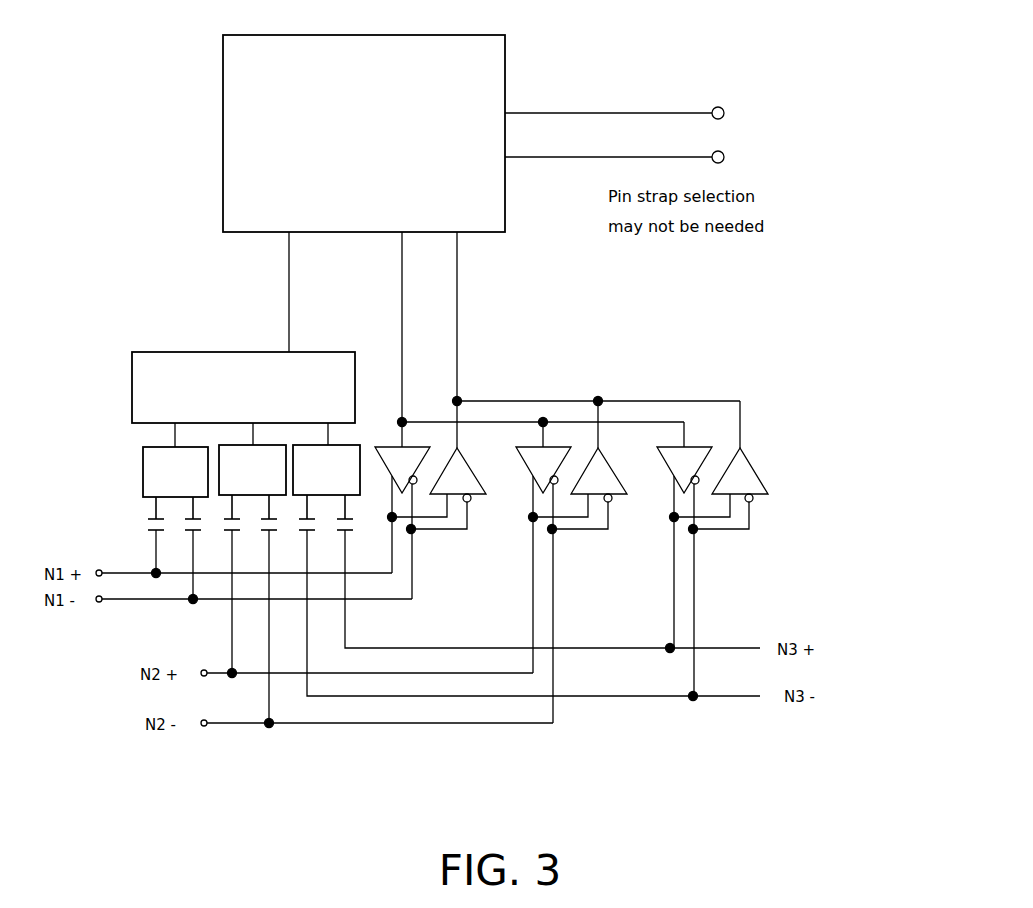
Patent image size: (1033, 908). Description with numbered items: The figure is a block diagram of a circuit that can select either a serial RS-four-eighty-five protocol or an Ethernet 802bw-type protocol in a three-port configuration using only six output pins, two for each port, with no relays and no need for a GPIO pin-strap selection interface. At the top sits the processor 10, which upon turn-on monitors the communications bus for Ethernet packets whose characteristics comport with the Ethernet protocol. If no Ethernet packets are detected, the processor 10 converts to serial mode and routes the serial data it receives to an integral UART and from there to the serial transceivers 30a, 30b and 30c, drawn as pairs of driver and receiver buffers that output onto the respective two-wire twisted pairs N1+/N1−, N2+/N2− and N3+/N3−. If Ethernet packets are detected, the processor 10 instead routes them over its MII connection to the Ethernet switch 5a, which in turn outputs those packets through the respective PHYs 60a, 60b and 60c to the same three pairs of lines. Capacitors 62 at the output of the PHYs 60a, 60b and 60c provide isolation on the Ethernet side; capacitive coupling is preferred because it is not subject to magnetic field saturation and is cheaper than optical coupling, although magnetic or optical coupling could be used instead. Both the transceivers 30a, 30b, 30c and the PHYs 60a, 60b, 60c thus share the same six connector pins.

The processor 10 is at (510, 62).
The Ethernet switch 5a is at (116, 372).
The PHY 60a is at (130, 483).
The PHY 60b is at (256, 445).
The PHY 60c is at (351, 440).
The capacitors 62 is at (128, 526).
The RS-485 transceiver 30a is at (485, 453).
The RS-485 transceiver 30b is at (625, 448).
The RS-485 transceiver 30c is at (776, 462).